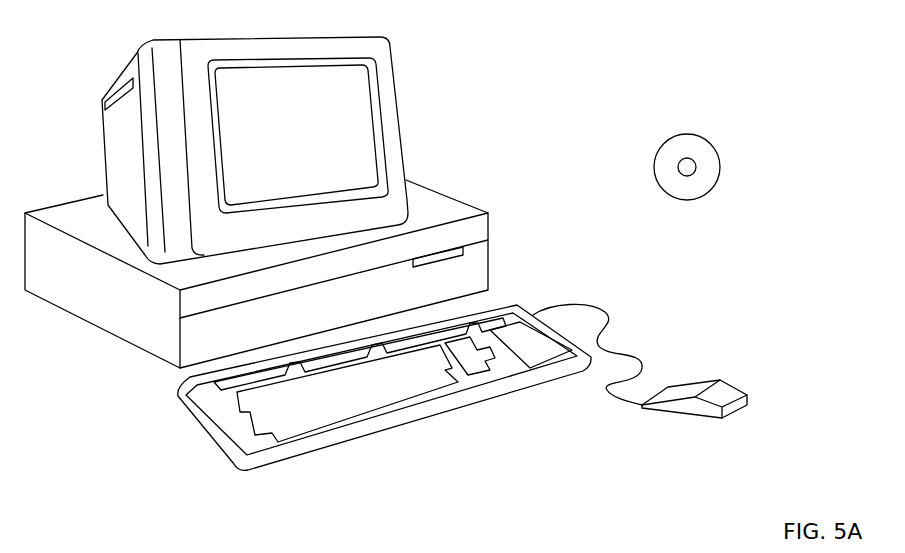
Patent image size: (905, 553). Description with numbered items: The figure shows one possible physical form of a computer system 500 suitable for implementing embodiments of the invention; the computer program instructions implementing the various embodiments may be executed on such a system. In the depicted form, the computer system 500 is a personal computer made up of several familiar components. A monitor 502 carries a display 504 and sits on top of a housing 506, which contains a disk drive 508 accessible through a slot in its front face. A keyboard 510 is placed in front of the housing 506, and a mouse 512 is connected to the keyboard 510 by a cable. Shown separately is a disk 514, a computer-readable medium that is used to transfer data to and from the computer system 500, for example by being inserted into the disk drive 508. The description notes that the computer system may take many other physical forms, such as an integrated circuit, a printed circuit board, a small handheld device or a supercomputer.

The computer system 500 is at (785, 48).
The monitor 502 is at (403, 147).
The display 504 is at (363, 100).
The housing 506 is at (143, 353).
The disk drive 508 is at (462, 245).
The keyboard 510 is at (385, 432).
The mouse 512 is at (735, 390).
The disk 514 is at (703, 136).